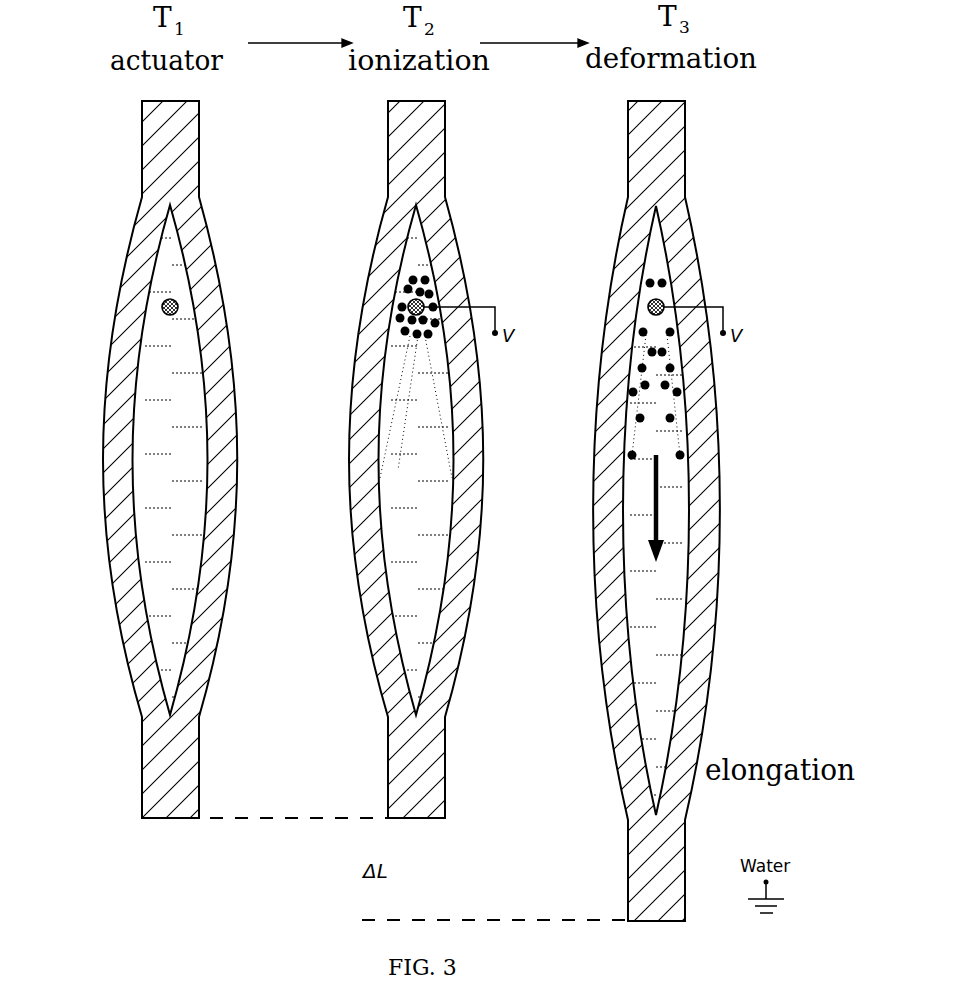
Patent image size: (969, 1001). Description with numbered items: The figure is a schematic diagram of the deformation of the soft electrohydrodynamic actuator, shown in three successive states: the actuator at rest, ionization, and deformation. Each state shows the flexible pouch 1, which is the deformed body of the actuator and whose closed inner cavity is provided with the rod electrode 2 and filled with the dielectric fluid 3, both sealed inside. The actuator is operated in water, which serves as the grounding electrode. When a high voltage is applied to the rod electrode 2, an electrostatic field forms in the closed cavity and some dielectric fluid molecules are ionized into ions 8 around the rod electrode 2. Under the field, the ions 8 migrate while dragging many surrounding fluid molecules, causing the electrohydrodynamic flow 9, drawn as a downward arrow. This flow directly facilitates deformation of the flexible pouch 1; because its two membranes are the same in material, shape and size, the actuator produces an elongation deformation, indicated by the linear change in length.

The flexible pouch 1 is at (150, 696).
The rod electrode 2 is at (163, 300).
The dielectric fluid 3 is at (173, 444).
The ions 8 is at (405, 295).
The electrohydrodynamic flow 9 is at (658, 523).